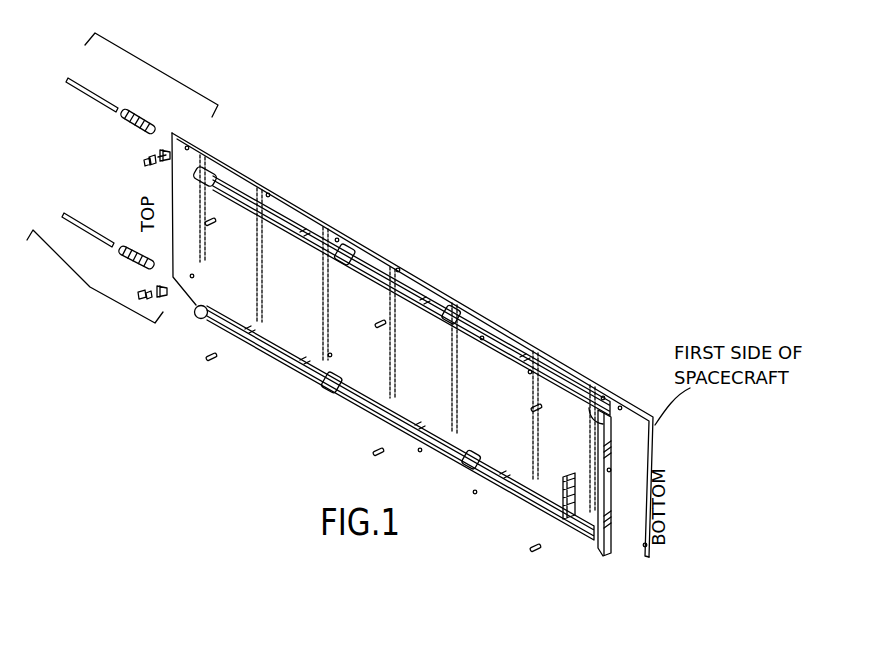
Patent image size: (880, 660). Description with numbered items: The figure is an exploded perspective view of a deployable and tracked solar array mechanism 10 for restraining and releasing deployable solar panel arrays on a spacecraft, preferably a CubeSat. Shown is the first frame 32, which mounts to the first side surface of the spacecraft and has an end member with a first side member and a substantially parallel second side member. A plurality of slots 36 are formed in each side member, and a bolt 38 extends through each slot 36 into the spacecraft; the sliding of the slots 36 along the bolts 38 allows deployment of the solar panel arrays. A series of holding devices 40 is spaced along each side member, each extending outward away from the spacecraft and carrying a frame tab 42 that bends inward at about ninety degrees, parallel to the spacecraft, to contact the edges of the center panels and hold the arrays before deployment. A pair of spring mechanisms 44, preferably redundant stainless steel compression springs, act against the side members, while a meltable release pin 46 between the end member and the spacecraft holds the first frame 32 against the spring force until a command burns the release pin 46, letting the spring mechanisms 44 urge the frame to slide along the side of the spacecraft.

The deployable and tracked solar array mechanism 10 is at (518, 276).
The first frame 32 is at (530, 353).
The slots 36 is at (250, 202).
The bolt 38 is at (214, 218).
The holding devices 40 is at (345, 250).
The frame tab 42 is at (206, 309).
The spring mechanisms 44 is at (157, 65).
The meltable release pin 46 is at (564, 499).